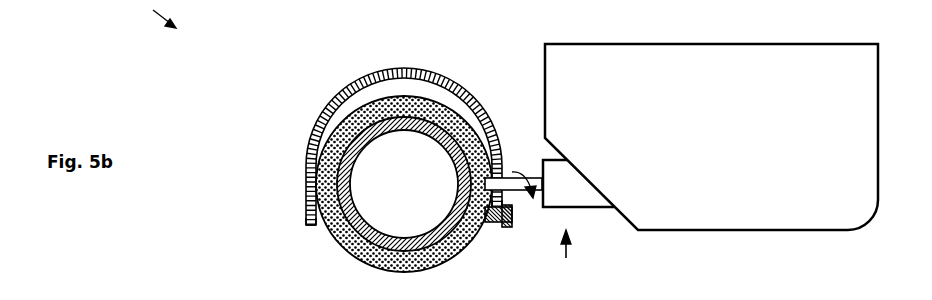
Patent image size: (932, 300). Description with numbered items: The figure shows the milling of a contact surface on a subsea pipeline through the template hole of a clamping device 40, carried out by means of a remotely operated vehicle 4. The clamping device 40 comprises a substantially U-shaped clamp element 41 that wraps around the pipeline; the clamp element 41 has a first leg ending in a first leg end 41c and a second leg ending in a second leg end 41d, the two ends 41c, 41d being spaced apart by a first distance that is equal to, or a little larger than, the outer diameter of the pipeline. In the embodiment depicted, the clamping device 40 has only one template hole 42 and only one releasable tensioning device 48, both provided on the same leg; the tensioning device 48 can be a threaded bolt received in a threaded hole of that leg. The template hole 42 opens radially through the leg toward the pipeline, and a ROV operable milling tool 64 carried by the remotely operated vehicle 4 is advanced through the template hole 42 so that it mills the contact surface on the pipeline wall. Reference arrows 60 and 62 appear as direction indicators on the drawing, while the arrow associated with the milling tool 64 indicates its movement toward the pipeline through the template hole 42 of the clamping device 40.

The remotely operated vehicle 4 is at (867, 72).
The clamping device 40 is at (405, 160).
The U-shaped clamp element 41 is at (352, 76).
The first leg end 41c is at (305, 226).
The second leg end 41d is at (490, 227).
The template hole 42 is at (504, 176).
The releasable tensioning device 48 is at (513, 226).
The direction arrow 60 is at (154, 150).
The direction arrow 62 is at (578, 3).
The ROV operable milling tool 64 is at (572, 259).